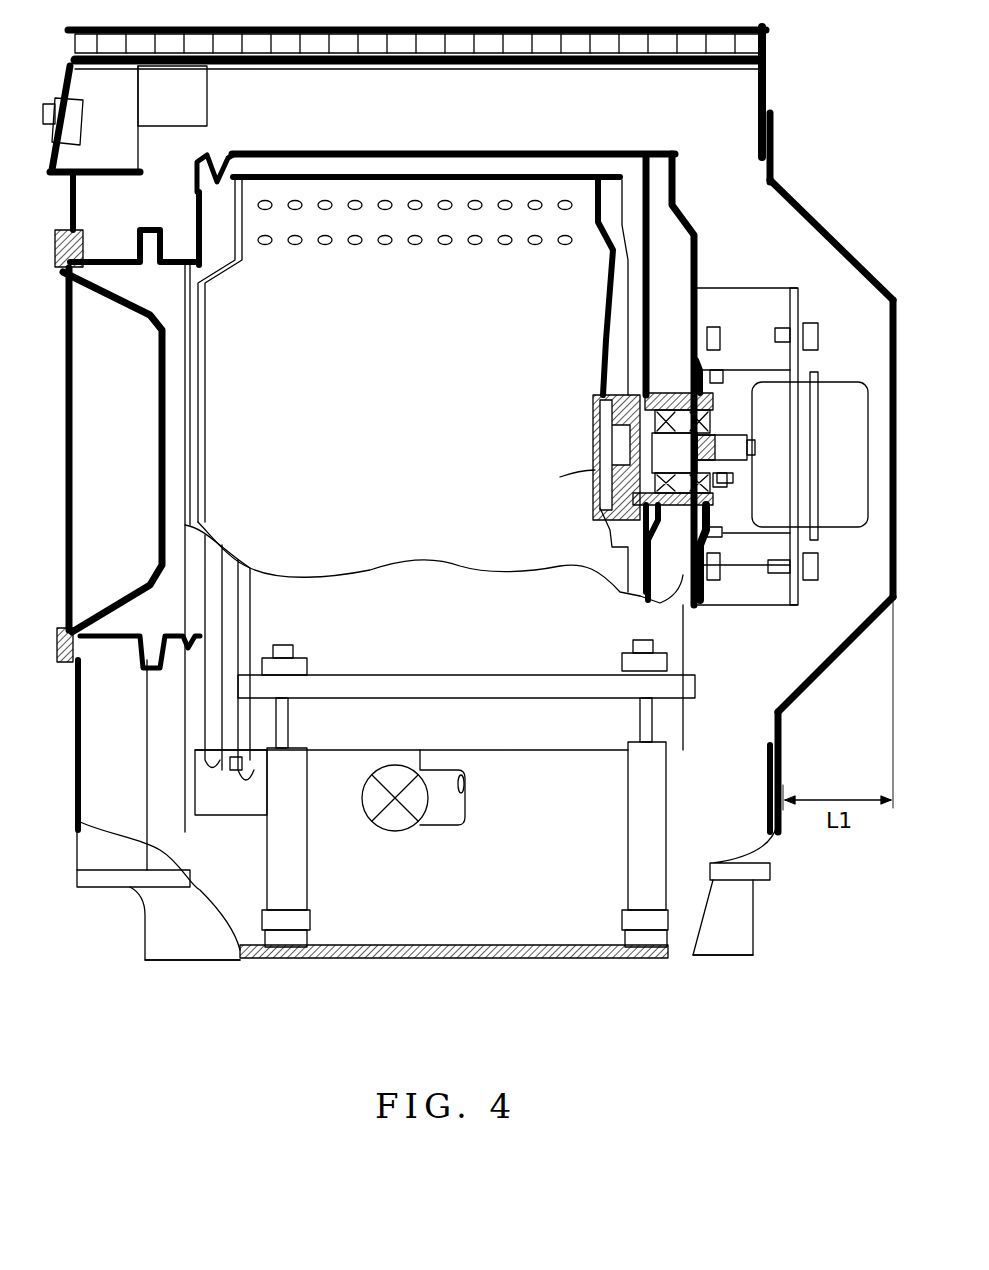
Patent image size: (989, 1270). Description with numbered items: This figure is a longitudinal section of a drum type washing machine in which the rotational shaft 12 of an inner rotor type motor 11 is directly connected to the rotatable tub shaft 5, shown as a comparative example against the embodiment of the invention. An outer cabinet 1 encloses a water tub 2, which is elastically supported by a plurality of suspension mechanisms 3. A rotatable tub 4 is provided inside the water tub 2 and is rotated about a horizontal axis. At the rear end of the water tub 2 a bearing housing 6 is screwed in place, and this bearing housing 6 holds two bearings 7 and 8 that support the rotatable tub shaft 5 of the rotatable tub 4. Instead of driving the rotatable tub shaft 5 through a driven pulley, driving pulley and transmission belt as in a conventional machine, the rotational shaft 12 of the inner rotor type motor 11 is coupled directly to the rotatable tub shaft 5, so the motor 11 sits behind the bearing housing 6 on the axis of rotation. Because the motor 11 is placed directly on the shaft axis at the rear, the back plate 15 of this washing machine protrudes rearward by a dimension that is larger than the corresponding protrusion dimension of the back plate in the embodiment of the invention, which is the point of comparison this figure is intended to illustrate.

The outer cabinet 1 is at (768, 78).
The water tub 2 is at (506, 150).
The suspension mechanisms 3 is at (268, 888).
The rotatable tub 4 is at (401, 172).
The rotatable tub shaft 5 is at (595, 470).
The bearing housing 6 is at (676, 390).
The bearing 7 is at (648, 520).
The bearing 8 is at (710, 500).
The inner rotor type motor 11 is at (846, 380).
The rotational shaft 12 is at (727, 448).
The back plate 15 is at (828, 232).